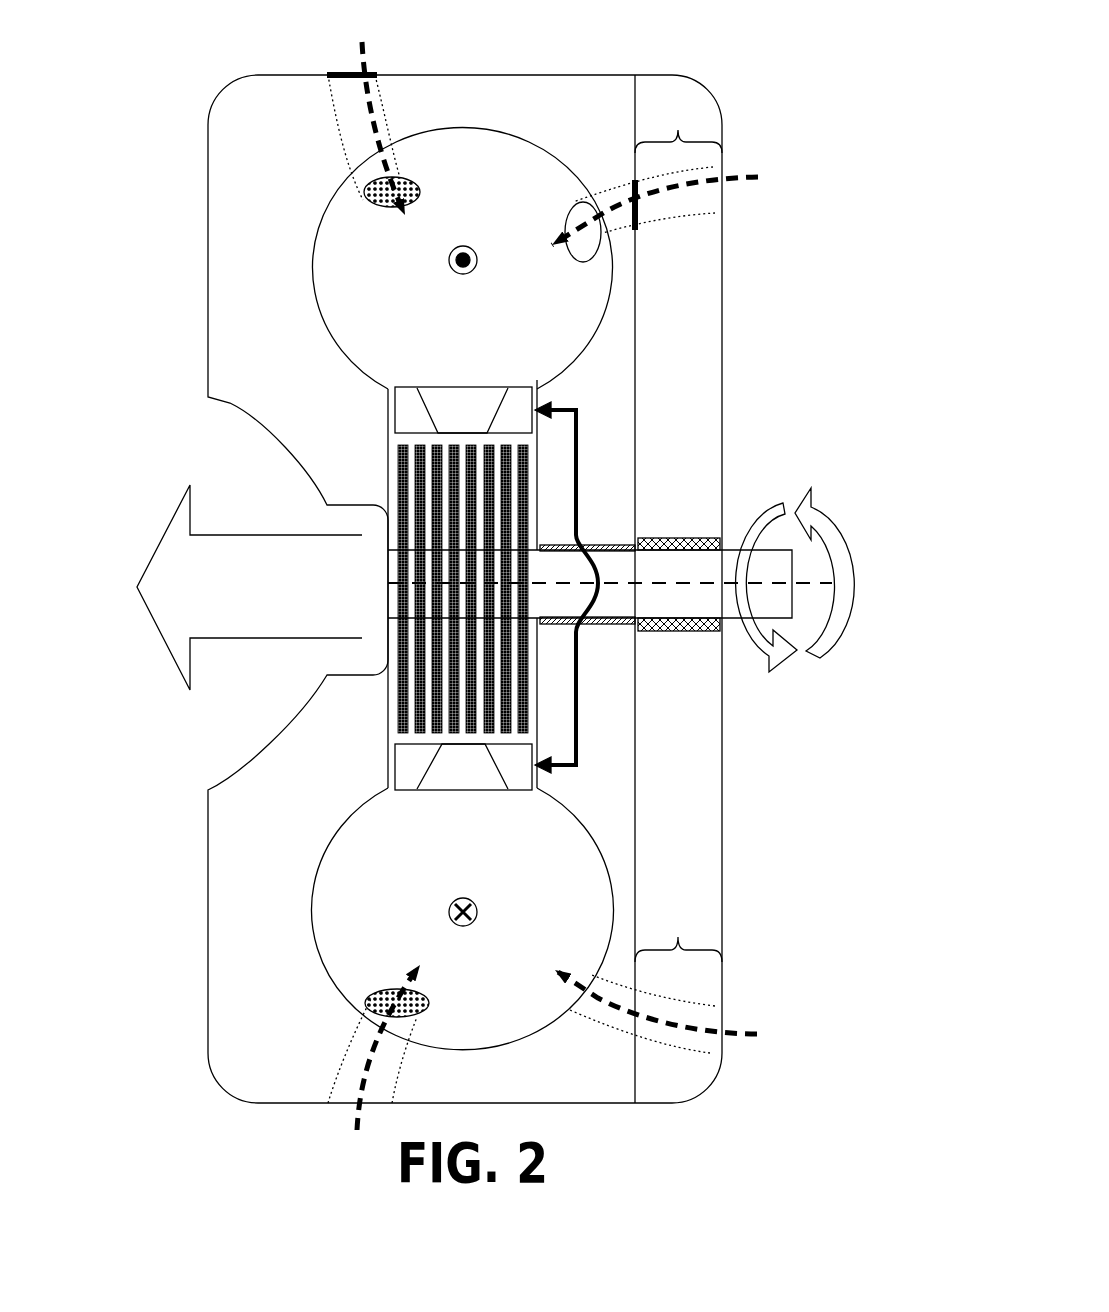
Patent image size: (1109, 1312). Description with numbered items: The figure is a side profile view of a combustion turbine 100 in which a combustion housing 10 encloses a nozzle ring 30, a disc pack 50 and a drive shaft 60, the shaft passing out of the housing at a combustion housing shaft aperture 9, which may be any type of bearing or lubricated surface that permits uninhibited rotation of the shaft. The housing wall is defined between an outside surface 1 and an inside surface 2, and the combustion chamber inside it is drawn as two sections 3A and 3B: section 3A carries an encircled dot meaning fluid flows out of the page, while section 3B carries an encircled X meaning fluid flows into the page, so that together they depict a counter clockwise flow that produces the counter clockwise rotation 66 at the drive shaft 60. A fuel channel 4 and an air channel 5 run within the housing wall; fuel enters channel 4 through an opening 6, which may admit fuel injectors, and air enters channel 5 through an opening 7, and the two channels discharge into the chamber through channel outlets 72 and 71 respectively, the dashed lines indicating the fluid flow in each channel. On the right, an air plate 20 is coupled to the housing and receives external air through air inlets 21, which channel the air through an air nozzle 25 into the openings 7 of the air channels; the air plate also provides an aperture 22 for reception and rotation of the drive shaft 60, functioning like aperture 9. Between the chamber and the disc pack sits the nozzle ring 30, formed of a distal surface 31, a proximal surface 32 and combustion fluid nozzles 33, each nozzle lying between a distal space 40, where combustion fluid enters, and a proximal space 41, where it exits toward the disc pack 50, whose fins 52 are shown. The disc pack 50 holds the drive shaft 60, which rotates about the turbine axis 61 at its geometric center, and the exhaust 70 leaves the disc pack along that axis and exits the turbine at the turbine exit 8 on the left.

The turbine 100 is at (752, 100).
The combustion housing 10 is at (465, 589).
The outside surface 1 is at (207, 245).
The inside surface 2 is at (316, 222).
The combustion chamber section 3A is at (463, 258).
The combustion chamber section 3B is at (463, 919).
The fuel channel 4 is at (332, 128).
The air channel 5 is at (612, 182).
The opening 6 is at (332, 74).
The opening 7 is at (642, 215).
The turbine exit 8 is at (300, 468).
The shaft aperture 9 is at (612, 548).
The air plate 20 is at (667, 589).
The air inlet 21 is at (722, 200).
The aperture 22 is at (683, 632).
The air nozzle 25 is at (678, 531).
The nozzle ring 30 is at (576, 460).
The distal surface 31 is at (400, 386).
The proximal surface 32 is at (420, 430).
The combustion fluid nozzle 33 is at (463, 588).
The distal space 40 is at (478, 792).
The proximal space 41 is at (465, 748).
The disc pack 50 is at (429, 589).
The heat exchanger fin 52 is at (400, 678).
The drive shaft 60 is at (646, 570).
The turbine axis 61 is at (836, 583).
The counter clockwise rotation 66 is at (818, 500).
The exhaust 70 is at (249, 587).
The channel outlet 71 is at (566, 215).
The channel outlet 72 is at (425, 188).